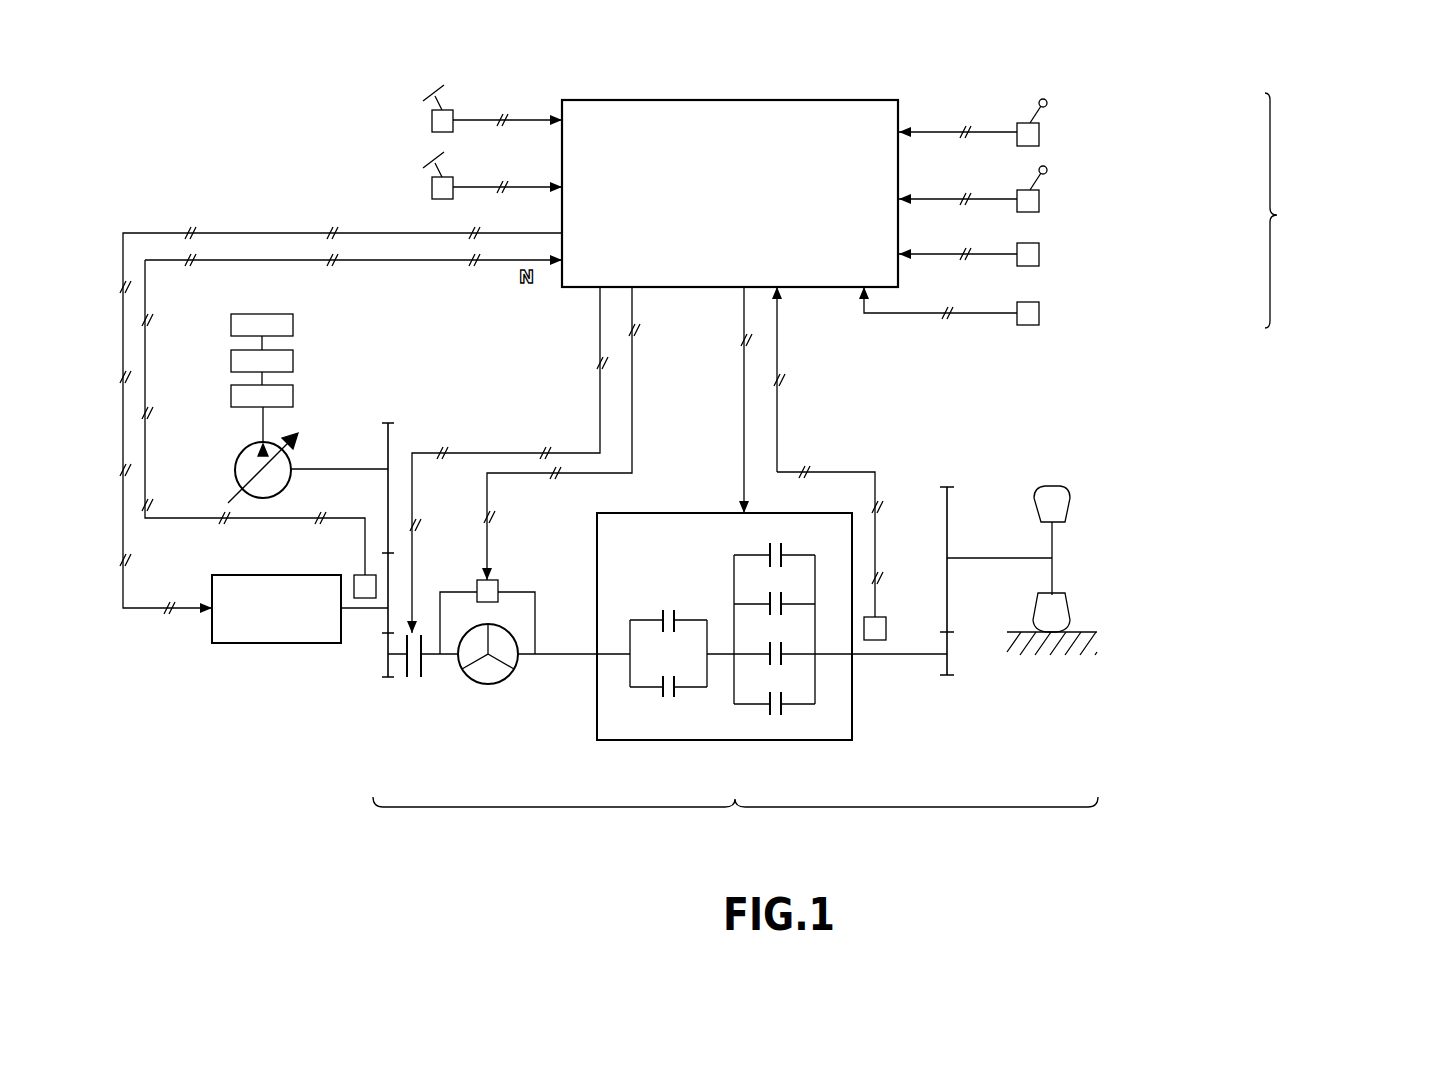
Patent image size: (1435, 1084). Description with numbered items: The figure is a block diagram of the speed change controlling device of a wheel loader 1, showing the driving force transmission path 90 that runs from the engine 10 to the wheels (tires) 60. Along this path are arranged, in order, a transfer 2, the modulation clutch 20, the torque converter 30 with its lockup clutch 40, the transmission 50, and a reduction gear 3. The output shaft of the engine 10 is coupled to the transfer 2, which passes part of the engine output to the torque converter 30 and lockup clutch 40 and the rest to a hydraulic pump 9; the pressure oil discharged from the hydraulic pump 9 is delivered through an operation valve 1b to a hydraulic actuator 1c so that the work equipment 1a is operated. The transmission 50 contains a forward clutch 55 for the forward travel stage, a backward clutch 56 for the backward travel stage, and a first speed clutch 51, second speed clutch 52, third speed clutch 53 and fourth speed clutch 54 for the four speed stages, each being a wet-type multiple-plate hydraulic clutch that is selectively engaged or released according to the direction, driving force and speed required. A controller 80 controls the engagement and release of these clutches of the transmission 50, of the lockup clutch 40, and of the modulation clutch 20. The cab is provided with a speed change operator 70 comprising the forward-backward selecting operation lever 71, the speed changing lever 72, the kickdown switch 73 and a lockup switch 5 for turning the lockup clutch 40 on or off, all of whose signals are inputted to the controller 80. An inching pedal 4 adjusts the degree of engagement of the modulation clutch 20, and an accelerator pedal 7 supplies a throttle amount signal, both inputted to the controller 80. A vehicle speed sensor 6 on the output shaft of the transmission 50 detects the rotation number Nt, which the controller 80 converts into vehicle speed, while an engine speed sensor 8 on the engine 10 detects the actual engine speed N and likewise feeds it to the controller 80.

The wheel loader 1 is at (1158, 680).
The work equipment 1a is at (293, 322).
The operation valve 1b is at (293, 358).
The hydraulic actuator 1c is at (293, 392).
The transfer 2 is at (392, 433).
The reduction gear 3 is at (948, 505).
The inching pedal 4 is at (432, 165).
The lockup switch 5 is at (1039, 313).
The vehicle speed sensor 6 is at (883, 617).
The accelerator pedal 7 is at (432, 96).
The engine speed sensor 8 is at (358, 575).
The hydraulic pump 9 is at (235, 463).
The engine 10 is at (277, 645).
The modulation clutch 20 is at (417, 680).
The torque converter 30 is at (490, 685).
The lockup clutch 40 is at (497, 582).
The transmission 50 is at (668, 742).
The first speed clutch 51 is at (783, 710).
The second speed clutch 52 is at (768, 657).
The third speed clutch 53 is at (768, 600).
The fourth speed clutch 54 is at (768, 550).
The forward clutch 55 is at (668, 697).
The backward clutch 56 is at (668, 610).
The wheels (tires) 60 is at (1070, 507).
The speed change operator 70 is at (1348, 210).
The forward-backward selecting operation lever 71 is at (1048, 104).
The speed changing lever 72 is at (1048, 171).
The kickdown switch 73 is at (1039, 254).
The controller 80 is at (838, 100).
The driving force transmission path 90 is at (735, 839).